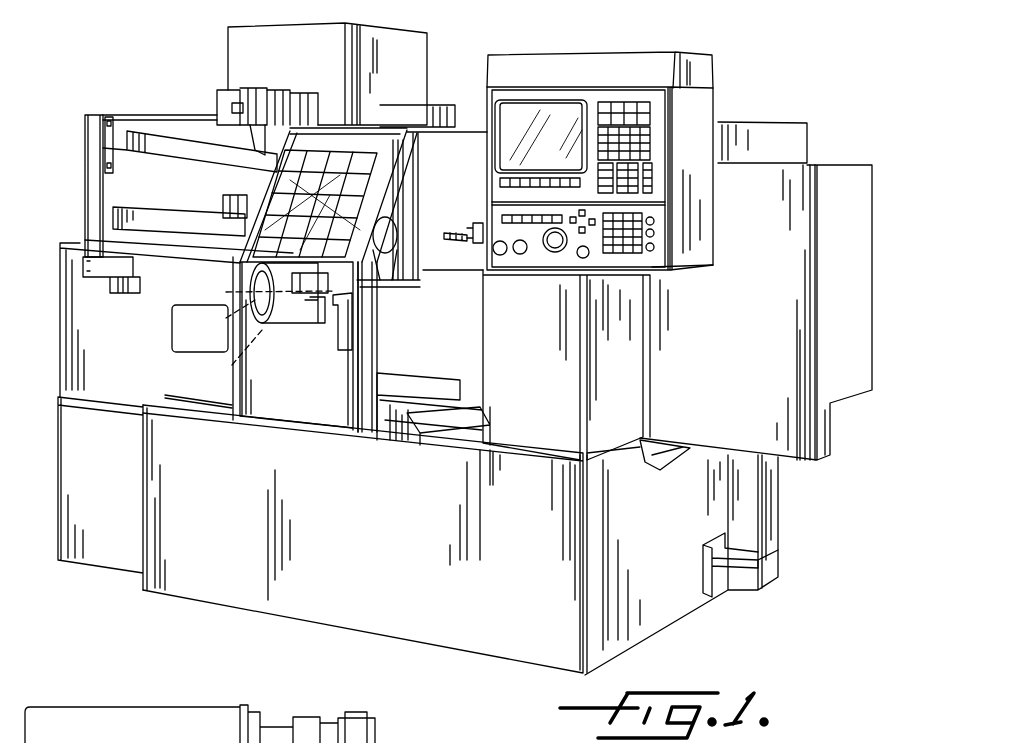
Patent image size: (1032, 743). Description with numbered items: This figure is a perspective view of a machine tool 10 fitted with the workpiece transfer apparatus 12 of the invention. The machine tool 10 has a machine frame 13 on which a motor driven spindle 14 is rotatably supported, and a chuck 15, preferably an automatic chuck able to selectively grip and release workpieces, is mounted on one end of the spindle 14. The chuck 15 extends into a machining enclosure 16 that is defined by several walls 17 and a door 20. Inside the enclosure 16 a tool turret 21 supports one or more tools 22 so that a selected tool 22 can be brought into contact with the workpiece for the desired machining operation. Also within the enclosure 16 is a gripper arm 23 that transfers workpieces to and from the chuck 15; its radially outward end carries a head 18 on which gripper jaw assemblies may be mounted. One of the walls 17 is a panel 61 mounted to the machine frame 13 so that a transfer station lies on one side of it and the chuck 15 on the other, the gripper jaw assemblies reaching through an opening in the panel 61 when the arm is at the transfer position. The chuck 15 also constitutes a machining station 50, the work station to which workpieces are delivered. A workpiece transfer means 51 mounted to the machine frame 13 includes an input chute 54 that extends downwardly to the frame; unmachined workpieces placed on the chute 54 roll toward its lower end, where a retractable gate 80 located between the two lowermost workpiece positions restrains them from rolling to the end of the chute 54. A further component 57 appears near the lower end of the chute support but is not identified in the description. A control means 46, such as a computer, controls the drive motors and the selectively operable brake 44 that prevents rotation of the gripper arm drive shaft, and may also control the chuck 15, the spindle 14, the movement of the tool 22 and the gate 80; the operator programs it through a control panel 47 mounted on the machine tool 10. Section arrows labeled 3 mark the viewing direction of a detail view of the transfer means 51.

The machine tool 10 is at (165, 577).
The workpiece transfer apparatus 12 is at (328, 140).
The machine frame 13 is at (137, 371).
The motor driven spindle 14 is at (236, 320).
The chuck 15 is at (232, 356).
The machining enclosure 16 is at (355, 367).
The walls 17 is at (477, 133).
The head 18 is at (249, 280).
The door 20 is at (287, 403).
The tool turret 21 is at (472, 230).
The tool 22 is at (453, 245).
The gripper arm 23 is at (418, 183).
The section line 3 is at (420, 125).
The brake 44 is at (303, 727).
The control means 46 is at (716, 115).
The control panel 47 is at (595, 131).
The machining station 50 is at (294, 330).
The workpiece transfer means 51 is at (212, 189).
The input chute means 54 is at (170, 124).
The bracket 57 is at (163, 277).
The panel 61 is at (382, 350).
The retractable gate 80 is at (262, 155).